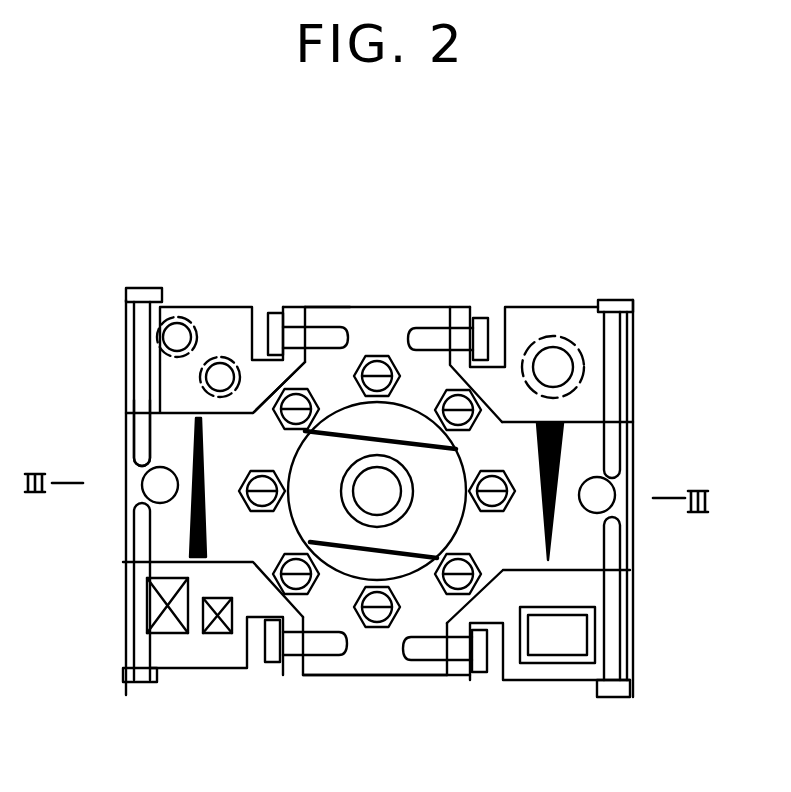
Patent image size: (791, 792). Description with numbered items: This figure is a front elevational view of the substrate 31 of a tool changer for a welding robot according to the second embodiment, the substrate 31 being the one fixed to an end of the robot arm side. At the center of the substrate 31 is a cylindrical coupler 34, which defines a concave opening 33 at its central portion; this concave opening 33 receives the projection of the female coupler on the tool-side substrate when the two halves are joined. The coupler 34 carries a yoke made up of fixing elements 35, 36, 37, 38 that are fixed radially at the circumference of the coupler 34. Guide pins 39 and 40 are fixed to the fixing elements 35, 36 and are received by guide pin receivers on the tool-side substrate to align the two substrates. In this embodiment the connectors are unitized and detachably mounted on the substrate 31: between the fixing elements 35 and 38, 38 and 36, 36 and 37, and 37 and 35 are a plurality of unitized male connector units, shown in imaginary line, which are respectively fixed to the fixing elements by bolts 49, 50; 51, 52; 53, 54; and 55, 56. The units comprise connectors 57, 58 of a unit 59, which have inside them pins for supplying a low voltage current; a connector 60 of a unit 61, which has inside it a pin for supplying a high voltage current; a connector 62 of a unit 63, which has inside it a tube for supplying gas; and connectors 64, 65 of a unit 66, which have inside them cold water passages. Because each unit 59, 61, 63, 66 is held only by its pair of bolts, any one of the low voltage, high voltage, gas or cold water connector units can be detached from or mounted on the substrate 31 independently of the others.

The substrate 31 is at (385, 298).
The concave opening 33 is at (393, 462).
The cylindrical coupler 34 is at (417, 435).
The fixing element 35 is at (167, 527).
The fixing element 36 is at (585, 447).
The fixing element 37 is at (348, 307).
The fixing element 38 is at (358, 675).
The guide pin 39 is at (148, 463).
The guide pin 40 is at (603, 487).
The bolt 49 is at (270, 653).
The bolt 50 is at (128, 683).
The bolt 51 is at (480, 660).
The bolt 52 is at (609, 697).
The bolt 53 is at (628, 300).
The bolt 54 is at (487, 318).
The bolt 55 is at (293, 325).
The bolt 56 is at (140, 288).
The connector 57 is at (150, 585).
The connector 58 is at (210, 630).
The unit 59 is at (170, 650).
The connector 60 is at (573, 638).
The unit 61 is at (518, 680).
The connector 62 is at (558, 362).
The unit 63 is at (555, 335).
The connector 64 is at (177, 337).
The connector 65 is at (221, 377).
The unit 66 is at (167, 377).